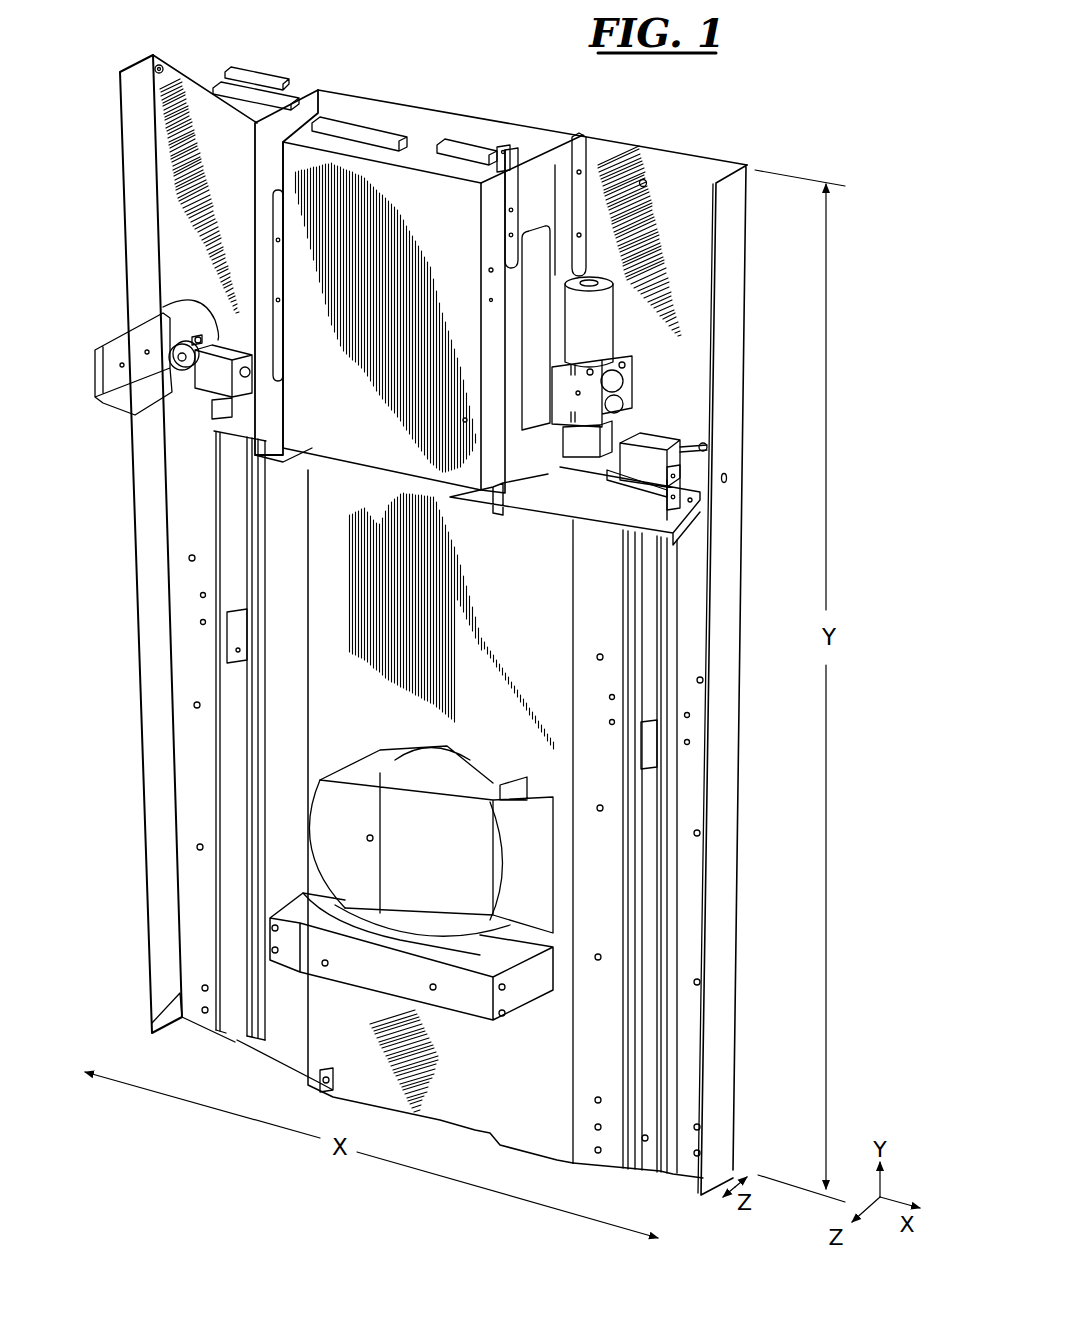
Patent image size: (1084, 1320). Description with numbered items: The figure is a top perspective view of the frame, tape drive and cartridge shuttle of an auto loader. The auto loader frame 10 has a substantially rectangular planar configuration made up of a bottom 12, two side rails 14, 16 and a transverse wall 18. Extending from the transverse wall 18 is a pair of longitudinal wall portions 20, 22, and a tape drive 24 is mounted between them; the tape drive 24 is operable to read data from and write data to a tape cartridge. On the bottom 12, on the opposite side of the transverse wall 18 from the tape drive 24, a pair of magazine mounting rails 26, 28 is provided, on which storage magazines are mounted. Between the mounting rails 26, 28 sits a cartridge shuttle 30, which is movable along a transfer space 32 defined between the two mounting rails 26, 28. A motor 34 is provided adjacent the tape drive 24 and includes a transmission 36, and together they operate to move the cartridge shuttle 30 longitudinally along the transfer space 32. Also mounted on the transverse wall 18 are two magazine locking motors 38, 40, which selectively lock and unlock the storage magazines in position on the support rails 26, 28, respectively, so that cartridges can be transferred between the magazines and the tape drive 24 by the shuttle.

The auto loader frame 10 is at (755, 120).
The bottom 12 is at (687, 170).
The side rail 14 is at (737, 267).
The side rail 16 is at (124, 188).
The transverse wall 18 is at (647, 513).
The longitudinal wall portion 20 is at (557, 163).
The longitudinal wall portion 22 is at (312, 110).
The tape drive 24 is at (407, 180).
The magazine mounting rail 26 is at (690, 797).
The magazine mounting rail 28 is at (197, 710).
The cartridge shuttle 30 is at (343, 967).
The transfer space 32 is at (413, 1077).
The motor 34 is at (590, 327).
The transmission 36 is at (603, 398).
The magazine locking motor 38 is at (707, 448).
The magazine locking motor 40 is at (163, 307).